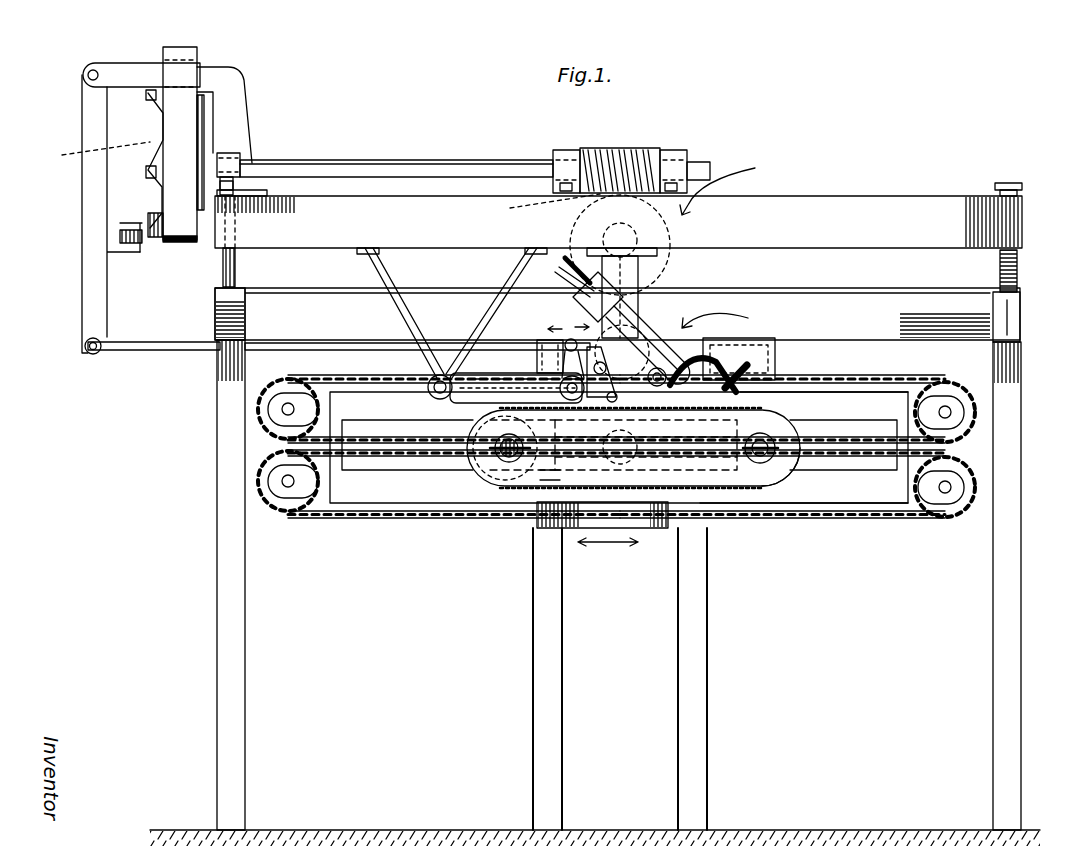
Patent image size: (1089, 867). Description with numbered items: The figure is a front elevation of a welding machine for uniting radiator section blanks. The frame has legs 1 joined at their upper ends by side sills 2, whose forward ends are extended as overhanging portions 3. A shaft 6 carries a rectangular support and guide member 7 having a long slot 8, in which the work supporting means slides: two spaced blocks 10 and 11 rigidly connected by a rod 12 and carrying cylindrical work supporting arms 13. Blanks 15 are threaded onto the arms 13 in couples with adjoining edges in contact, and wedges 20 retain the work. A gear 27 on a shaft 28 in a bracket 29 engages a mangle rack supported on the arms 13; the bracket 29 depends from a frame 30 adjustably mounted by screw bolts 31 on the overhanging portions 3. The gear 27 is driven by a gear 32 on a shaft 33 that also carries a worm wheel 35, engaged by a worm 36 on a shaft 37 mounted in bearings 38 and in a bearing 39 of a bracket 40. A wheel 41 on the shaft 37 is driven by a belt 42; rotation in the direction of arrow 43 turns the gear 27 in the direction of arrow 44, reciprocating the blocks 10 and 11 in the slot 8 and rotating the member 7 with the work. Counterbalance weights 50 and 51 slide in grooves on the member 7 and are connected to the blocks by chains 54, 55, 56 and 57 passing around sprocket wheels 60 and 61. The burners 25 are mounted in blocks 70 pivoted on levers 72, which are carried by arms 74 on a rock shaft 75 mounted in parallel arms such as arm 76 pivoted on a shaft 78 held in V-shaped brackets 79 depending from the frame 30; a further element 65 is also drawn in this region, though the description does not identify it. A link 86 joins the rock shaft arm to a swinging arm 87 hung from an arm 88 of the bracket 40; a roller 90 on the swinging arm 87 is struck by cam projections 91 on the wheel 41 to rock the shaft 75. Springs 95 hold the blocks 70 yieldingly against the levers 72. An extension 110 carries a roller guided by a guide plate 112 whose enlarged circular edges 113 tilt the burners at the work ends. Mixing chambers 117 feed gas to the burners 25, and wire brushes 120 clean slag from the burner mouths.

The legs 1 is at (1021, 645).
The side sills 2 is at (1040, 285).
The overhanging portions 3 is at (1021, 322).
The shaft 6 is at (650, 486).
The support and guide member 7 is at (870, 503).
The slot 8 is at (798, 487).
The block 10 is at (495, 478).
The block 11 is at (760, 470).
The rod 12 is at (540, 470).
The work supporting arms 13 is at (800, 405).
The blanks 15 is at (770, 462).
The wedges 20 is at (790, 481).
The burners 25 is at (748, 372).
The gear 27 is at (720, 338).
The shaft 28 is at (640, 296).
The bracket 29 is at (658, 254).
The frame 30 is at (822, 215).
The adjusting screw bolts 31 is at (1017, 265).
The gear 32 is at (668, 252).
The shaft 33 is at (602, 236).
The worm wheel 35 is at (541, 209).
The worm 36 is at (617, 148).
The shaft 37 is at (448, 160).
The bearings 38 is at (685, 150).
The bearing 39 is at (240, 155).
The bracket 40 is at (243, 98).
The wheel 41 is at (99, 165).
The driving band or belt 42 is at (200, 55).
The arrow 43 is at (732, 181).
The arrow 44 is at (730, 316).
The counterbalance weight 50 is at (537, 350).
The counterbalance weight 51 is at (560, 474).
The chain 54 is at (925, 380).
The chain 55 is at (920, 518).
The chain 56 is at (315, 376).
The chain 57 is at (305, 518).
The sprocket wheels 60 is at (975, 487).
The sprocket wheels 61 is at (262, 483).
The lever 65 is at (590, 350).
The blocks 70 is at (644, 340).
The levers 72 is at (570, 282).
The arms 74 is at (571, 339).
The rock shaft 75 is at (584, 390).
The arm 76 is at (510, 378).
The shaft 78 is at (430, 382).
The brackets 79 is at (514, 268).
The link 86 is at (375, 343).
The swinging arm 87 is at (82, 276).
The arm 88 is at (140, 72).
The roller 90 is at (140, 252).
The cam projections 91 is at (146, 175).
The springs 95 is at (700, 374).
The extension 110 is at (613, 445).
The guide plate 112 is at (604, 530).
The circular edges 113 is at (470, 456).
The mixing chambers 117 is at (572, 266).
The wire brushes 120 is at (830, 392).